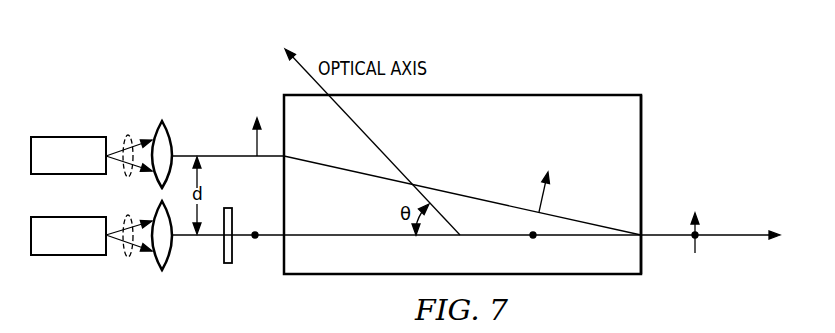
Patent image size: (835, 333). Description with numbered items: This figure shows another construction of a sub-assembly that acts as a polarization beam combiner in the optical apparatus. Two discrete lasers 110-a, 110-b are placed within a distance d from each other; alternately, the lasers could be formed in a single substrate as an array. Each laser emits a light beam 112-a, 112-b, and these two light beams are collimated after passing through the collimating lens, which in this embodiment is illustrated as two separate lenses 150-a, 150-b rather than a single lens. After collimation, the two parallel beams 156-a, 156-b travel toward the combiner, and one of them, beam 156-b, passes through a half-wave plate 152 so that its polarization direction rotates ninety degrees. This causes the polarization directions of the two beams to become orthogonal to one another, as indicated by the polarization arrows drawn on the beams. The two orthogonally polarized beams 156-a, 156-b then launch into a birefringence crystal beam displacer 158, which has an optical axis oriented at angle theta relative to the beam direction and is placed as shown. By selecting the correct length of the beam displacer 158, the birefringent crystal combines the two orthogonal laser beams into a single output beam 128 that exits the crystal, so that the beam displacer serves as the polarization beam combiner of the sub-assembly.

The laser 110-a is at (63, 137).
The laser 110-b is at (63, 255).
The light beam 112-a is at (128, 135).
The light beam 112-b is at (128, 258).
The collimating lens 150-a is at (171, 145).
The collimating lens 150-b is at (156, 208).
The collimated beam 156-a is at (220, 157).
The collimated beam 156-b is at (213, 237).
The λ/2 wave plate 152 is at (232, 250).
The birefringence crystal beam displacer 158 is at (641, 156).
The combined output beam 128 is at (733, 236).